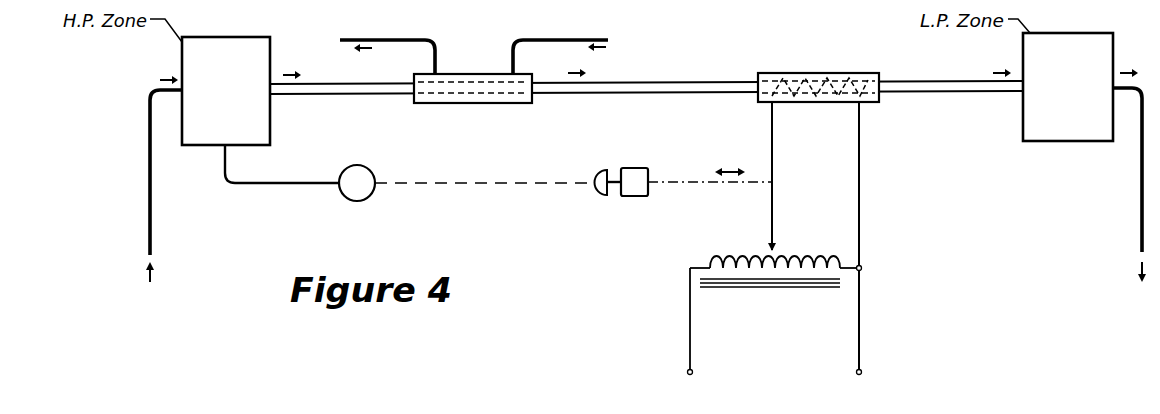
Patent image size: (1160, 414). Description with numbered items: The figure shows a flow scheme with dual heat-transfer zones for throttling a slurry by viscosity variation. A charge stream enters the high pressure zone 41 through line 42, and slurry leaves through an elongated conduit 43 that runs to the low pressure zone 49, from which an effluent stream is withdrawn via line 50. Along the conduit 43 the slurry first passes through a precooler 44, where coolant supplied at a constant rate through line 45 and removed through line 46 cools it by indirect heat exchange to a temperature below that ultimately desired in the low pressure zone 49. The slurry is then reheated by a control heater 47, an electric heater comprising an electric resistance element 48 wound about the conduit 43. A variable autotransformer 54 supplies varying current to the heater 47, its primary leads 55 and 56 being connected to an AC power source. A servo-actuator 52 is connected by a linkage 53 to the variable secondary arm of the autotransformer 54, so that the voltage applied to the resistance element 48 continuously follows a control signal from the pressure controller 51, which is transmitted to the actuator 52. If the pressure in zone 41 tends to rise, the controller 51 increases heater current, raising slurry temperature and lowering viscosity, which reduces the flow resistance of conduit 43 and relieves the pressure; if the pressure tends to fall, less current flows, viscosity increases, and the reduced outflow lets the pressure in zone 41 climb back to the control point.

The high pressure zone 41 is at (272, 125).
The line 42 is at (152, 193).
The elongated conduit 43 is at (312, 95).
The precooler 44 is at (490, 104).
The line 45 is at (545, 40).
The line 46 is at (415, 40).
The control heater 47 is at (790, 72).
The electric resistance element 48 is at (795, 100).
The low pressure zone 49 is at (1045, 142).
The line 50 is at (1140, 232).
The pressure controller 51 is at (362, 202).
The servo-actuator 52 is at (632, 196).
The linkage 53 is at (697, 180).
The variable autotransformer 54 is at (752, 262).
The primary lead 55 is at (688, 345).
The primary lead 56 is at (862, 345).